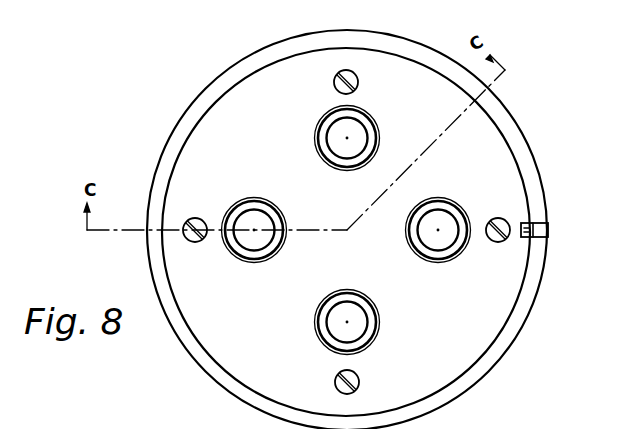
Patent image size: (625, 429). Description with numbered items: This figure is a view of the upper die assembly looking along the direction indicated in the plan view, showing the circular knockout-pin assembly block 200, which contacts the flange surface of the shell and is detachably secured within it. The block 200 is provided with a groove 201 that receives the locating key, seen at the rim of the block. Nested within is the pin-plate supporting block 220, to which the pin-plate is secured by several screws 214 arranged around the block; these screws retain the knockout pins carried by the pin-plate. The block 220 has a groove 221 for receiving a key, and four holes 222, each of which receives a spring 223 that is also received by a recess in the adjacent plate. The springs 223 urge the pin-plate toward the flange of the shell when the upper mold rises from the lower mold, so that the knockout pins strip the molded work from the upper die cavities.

The knockout-pin assembly block 200 is at (163, 167).
The pin-plate supporting block 220 is at (190, 134).
The screws 214 is at (334, 83).
The spring 223 is at (258, 191).
The holes 222 is at (284, 222).
The groove 221 is at (538, 228).
The groove 201 is at (550, 230).